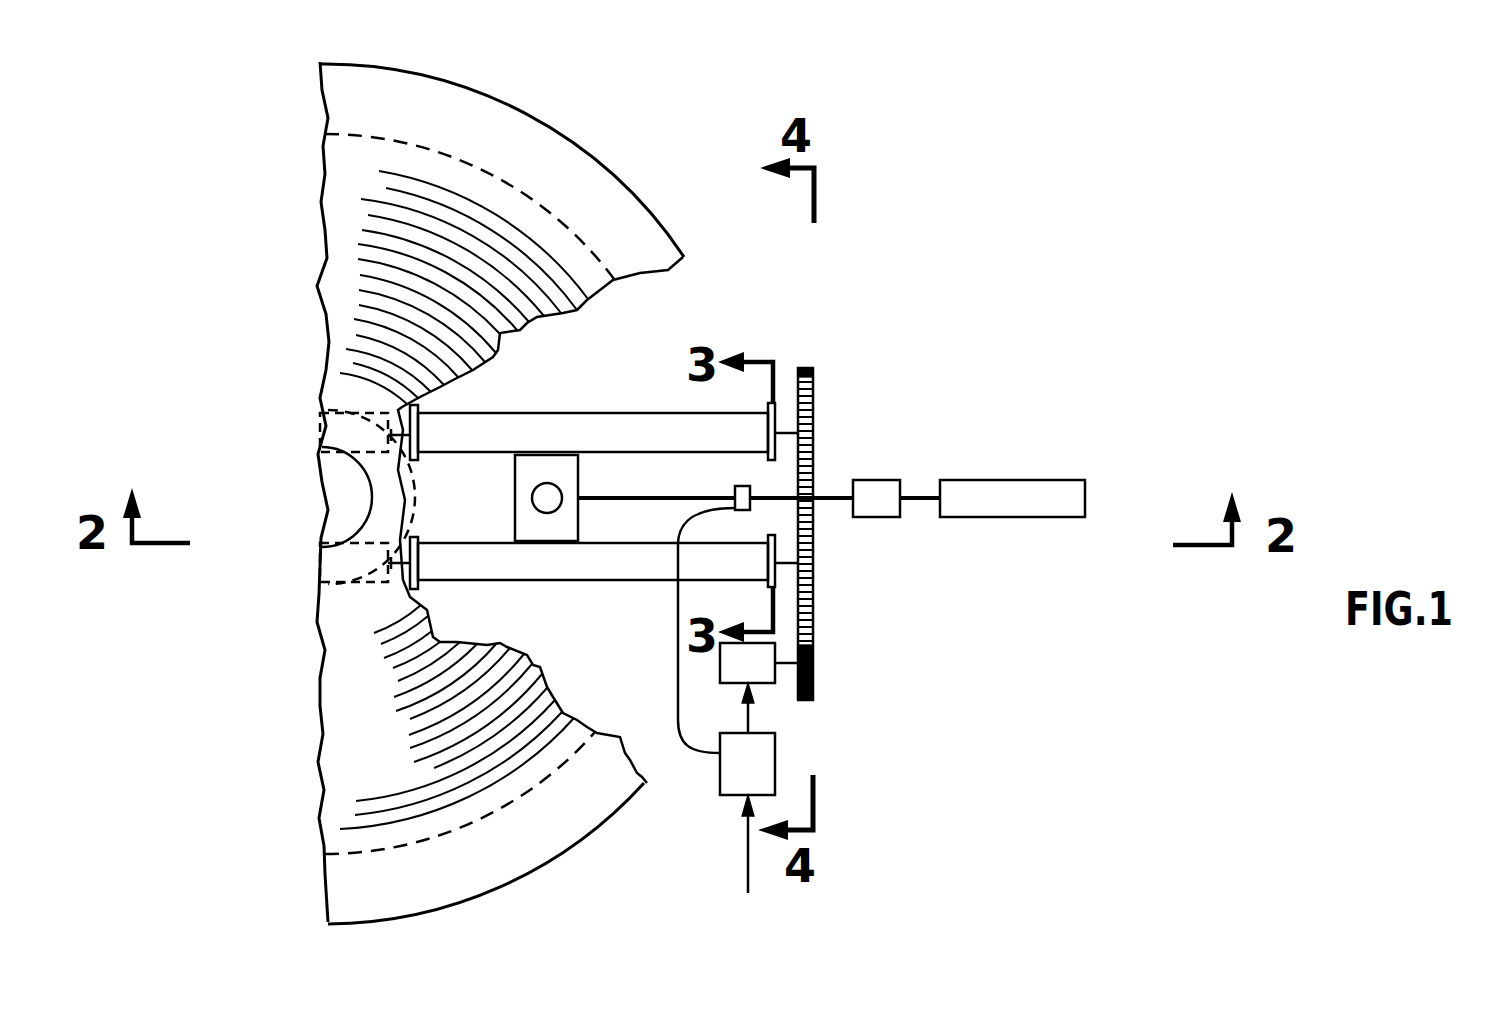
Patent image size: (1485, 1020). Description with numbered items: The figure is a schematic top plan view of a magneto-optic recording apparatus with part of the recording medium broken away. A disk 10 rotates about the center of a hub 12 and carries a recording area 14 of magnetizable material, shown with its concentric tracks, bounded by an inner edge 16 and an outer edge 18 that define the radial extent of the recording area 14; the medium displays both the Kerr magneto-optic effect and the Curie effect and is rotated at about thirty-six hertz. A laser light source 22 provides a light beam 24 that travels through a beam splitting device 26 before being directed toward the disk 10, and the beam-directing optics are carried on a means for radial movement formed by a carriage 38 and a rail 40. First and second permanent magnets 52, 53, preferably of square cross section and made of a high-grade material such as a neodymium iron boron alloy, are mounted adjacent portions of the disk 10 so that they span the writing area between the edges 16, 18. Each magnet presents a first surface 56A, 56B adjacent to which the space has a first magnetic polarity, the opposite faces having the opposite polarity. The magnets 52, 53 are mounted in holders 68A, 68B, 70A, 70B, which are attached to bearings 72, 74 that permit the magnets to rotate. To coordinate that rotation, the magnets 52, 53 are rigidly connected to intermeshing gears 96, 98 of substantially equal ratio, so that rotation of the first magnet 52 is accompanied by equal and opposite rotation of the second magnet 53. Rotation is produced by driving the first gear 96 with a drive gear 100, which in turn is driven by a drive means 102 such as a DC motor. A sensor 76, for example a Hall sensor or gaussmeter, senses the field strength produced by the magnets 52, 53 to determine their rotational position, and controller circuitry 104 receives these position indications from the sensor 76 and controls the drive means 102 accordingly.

The disk 10 is at (587, 150).
The hub 12 is at (325, 580).
The recording area 14 is at (405, 185).
The inner edge 16 is at (353, 582).
The outer edge 18 is at (503, 805).
The laser light source 22 is at (1070, 517).
The light beam 24 is at (880, 512).
The beam splitting device 26 is at (915, 503).
The carriage 38 is at (567, 508).
The rail 40 is at (627, 497).
The first permanent magnet 52 is at (513, 565).
The second permanent magnet 53 is at (508, 428).
The first surface of first magnet 56A is at (640, 565).
The first surface of second magnet 56B is at (637, 440).
The holder 68A is at (498, 630).
The holder 68B is at (497, 355).
The holder 70A is at (777, 572).
The holder 70B is at (776, 410).
The bearing 72 is at (350, 438).
The bearing 74 is at (350, 560).
The sensor 76 is at (750, 487).
The first gear 96 is at (813, 545).
The second gear 98 is at (815, 430).
The drive gear 100 is at (813, 665).
The drive means 102 is at (757, 680).
The controller circuitry 104 is at (765, 758).